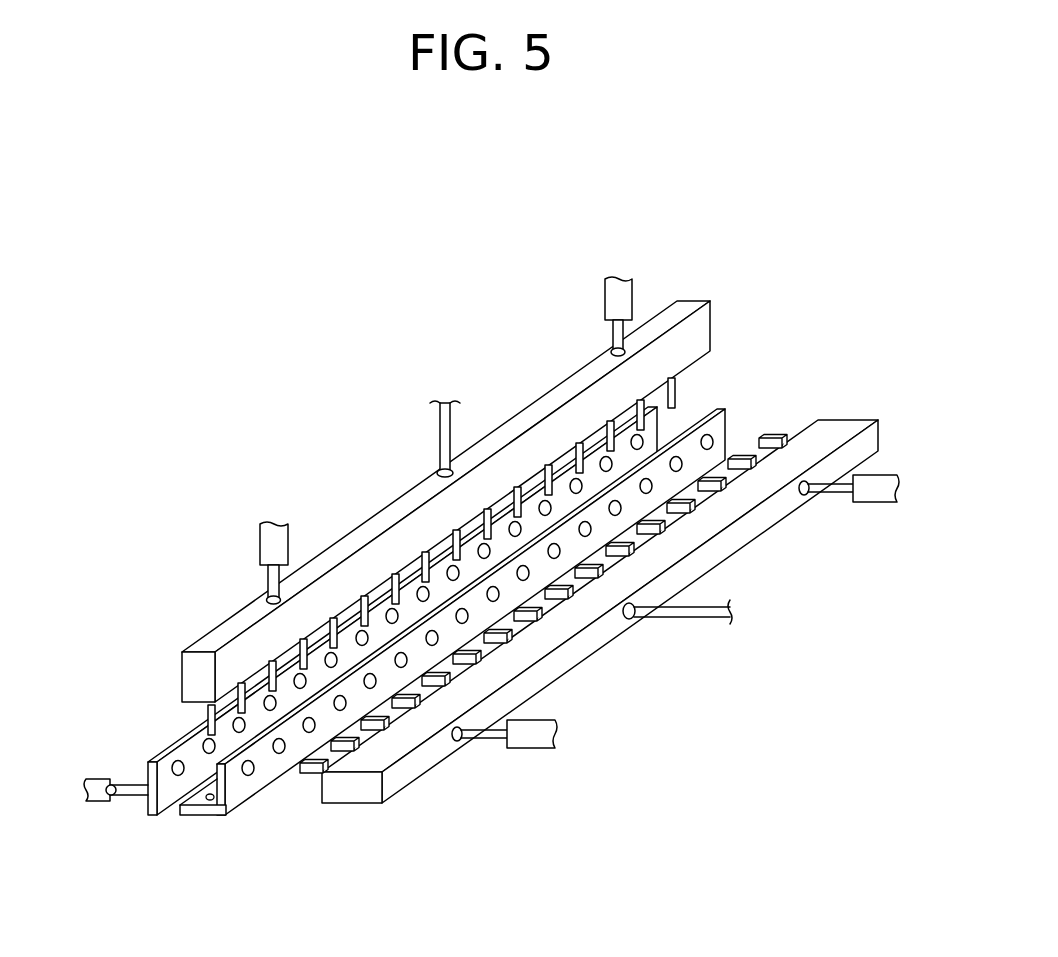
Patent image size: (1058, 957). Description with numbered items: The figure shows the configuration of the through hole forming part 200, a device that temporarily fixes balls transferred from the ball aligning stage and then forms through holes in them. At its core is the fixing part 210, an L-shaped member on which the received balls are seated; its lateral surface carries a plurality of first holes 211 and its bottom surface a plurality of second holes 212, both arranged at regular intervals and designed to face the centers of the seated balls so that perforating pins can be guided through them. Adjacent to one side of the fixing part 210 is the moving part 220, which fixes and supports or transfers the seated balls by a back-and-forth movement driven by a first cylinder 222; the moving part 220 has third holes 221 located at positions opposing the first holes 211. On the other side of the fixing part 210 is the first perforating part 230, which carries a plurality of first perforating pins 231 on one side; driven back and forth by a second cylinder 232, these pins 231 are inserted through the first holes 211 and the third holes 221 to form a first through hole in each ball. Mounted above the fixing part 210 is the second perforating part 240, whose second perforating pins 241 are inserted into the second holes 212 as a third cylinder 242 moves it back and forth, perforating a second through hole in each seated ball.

The through hole forming part 200 is at (300, 298).
The fixing part 210 is at (238, 800).
The first holes 211 is at (250, 777).
The second holes 212 is at (210, 817).
The moving part 220 is at (145, 805).
The third holes 221 is at (175, 773).
The first cylinder 222 is at (110, 782).
The first perforating part 230 is at (418, 767).
The first perforating pins 231 is at (316, 777).
The second cylinder 232 is at (878, 490).
The second perforating part 240 is at (360, 533).
The second perforating pins 241 is at (200, 710).
The third cylinder 242 is at (612, 298).